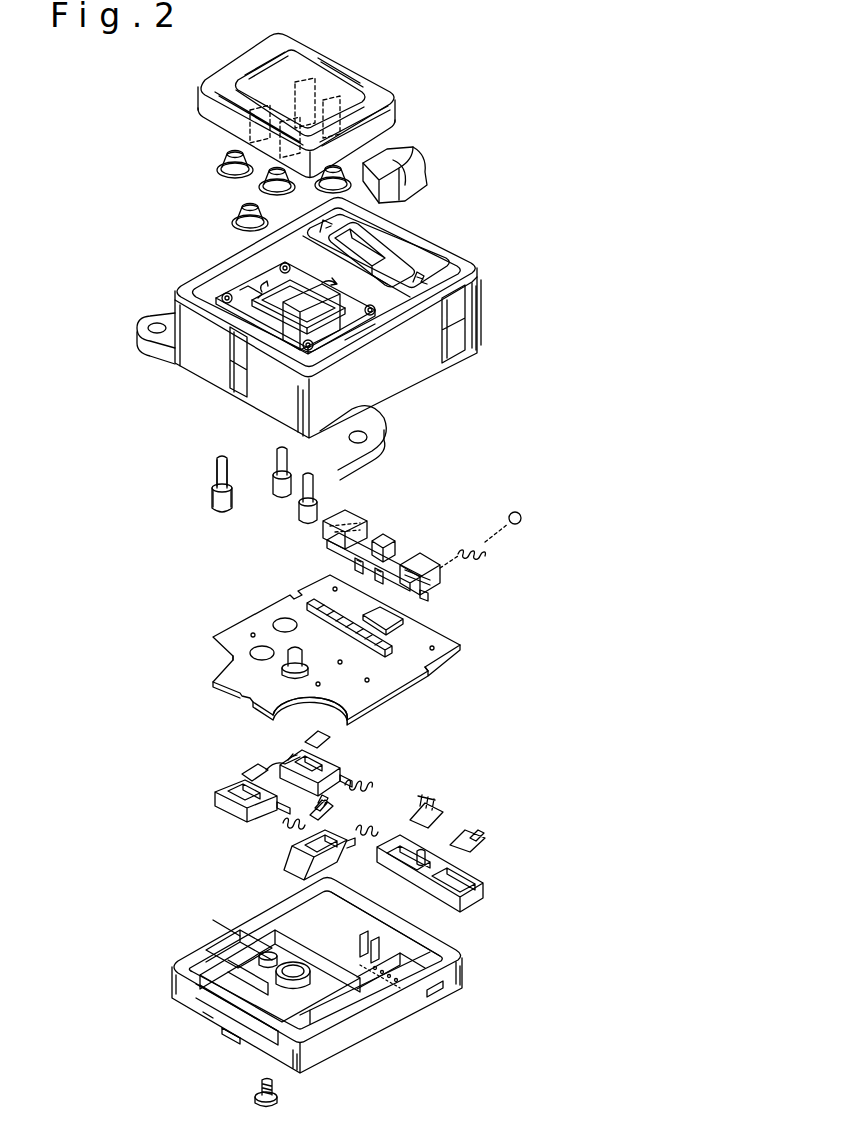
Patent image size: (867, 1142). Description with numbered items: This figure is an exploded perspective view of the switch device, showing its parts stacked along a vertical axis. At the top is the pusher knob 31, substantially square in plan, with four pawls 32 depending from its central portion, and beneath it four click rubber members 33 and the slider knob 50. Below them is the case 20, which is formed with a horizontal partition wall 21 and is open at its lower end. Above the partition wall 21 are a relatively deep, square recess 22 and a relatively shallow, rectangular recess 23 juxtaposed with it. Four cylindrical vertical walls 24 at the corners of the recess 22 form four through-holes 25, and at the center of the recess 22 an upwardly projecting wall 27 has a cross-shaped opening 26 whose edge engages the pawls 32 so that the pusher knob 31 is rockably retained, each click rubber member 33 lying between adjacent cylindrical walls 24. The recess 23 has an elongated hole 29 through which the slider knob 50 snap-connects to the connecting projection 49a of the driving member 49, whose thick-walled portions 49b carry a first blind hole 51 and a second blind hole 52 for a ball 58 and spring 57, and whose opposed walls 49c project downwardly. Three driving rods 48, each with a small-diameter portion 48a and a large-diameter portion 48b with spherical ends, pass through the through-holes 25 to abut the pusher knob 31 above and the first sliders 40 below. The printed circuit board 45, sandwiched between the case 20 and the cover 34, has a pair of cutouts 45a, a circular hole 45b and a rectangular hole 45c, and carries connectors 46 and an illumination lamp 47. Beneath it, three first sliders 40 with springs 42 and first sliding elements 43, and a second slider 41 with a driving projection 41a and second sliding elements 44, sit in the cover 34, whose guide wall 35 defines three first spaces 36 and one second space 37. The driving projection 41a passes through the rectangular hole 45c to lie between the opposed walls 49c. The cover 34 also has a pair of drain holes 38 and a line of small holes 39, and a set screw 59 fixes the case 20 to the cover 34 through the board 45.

The case 20 is at (481, 266).
The partition wall 21 is at (264, 277).
The deep recess 22 is at (385, 301).
The shallow recess 23 is at (415, 267).
The cylindrical vertical walls 24 is at (262, 284).
The through-holes 25 is at (218, 284).
The cross-shaped opening 26 is at (293, 324).
The upwardly projecting wall 27 is at (360, 348).
The elongated hole 29 is at (385, 260).
The pusher knob 31 is at (353, 64).
The pawls 32 is at (250, 118).
The click rubber members 33 is at (236, 216).
The cover 34 is at (470, 972).
The guide wall 35 is at (303, 986).
The first spaces 36 is at (280, 910).
The second space 37 is at (432, 947).
The drain holes 38 is at (228, 1034).
The small holes 39 is at (387, 977).
The first sliders 40 is at (287, 851).
The second slider 41 is at (480, 896).
The driving projection 41a is at (430, 858).
The spring 42 is at (378, 822).
The first sliding element 43 is at (303, 729).
The second sliding elements 44 is at (470, 828).
The printed circuit board 45 is at (245, 612).
The cutouts 45a is at (224, 662).
The circular hole 45b is at (283, 618).
The rectangular hole 45c is at (413, 618).
The connectors 46 is at (422, 667).
The illumination lamp 47 is at (288, 656).
The driving rods 48 is at (145, 458).
The small-diameter portion 48a is at (215, 466).
The large-diameter portion 48b is at (212, 501).
The driving member 49 is at (438, 591).
The connecting projection 49a is at (385, 536).
The thick-walled portions 49b is at (363, 527).
The opposed walls 49c is at (355, 567).
The slider knob 50 is at (405, 156).
The first blind hole 51 is at (440, 576).
The second blind hole 52 is at (345, 518).
The spring 57 is at (470, 538).
The ball 58 is at (522, 516).
The set screw 59 is at (257, 1093).